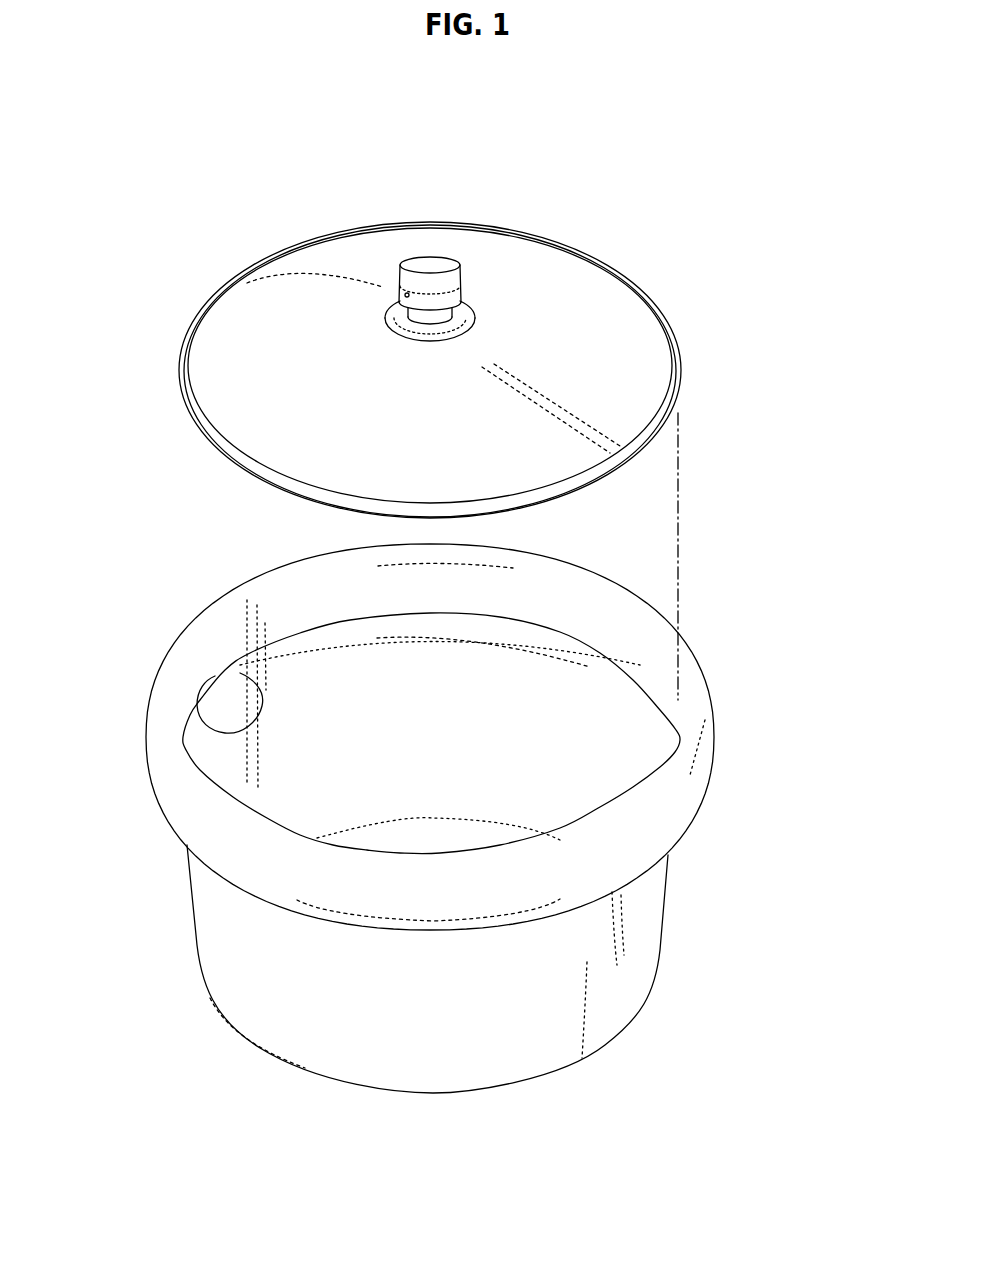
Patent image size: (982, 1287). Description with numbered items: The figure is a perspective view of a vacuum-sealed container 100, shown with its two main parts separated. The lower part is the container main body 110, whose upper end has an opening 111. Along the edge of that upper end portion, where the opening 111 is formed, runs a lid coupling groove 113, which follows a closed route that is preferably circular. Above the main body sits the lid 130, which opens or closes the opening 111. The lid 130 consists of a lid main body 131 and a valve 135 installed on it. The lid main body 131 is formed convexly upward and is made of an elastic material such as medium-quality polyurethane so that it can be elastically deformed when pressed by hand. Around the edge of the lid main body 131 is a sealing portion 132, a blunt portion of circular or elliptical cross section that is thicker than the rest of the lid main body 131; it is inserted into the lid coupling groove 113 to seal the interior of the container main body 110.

The vacuum-sealed container 100 is at (558, 169).
The container main body 110 is at (183, 930).
The opening 111 is at (597, 765).
The lid coupling groove 113 is at (181, 748).
The lid 130 is at (205, 301).
The lid main body 131 is at (623, 291).
The sealing portion 132 is at (185, 402).
The valve 135 is at (408, 263).